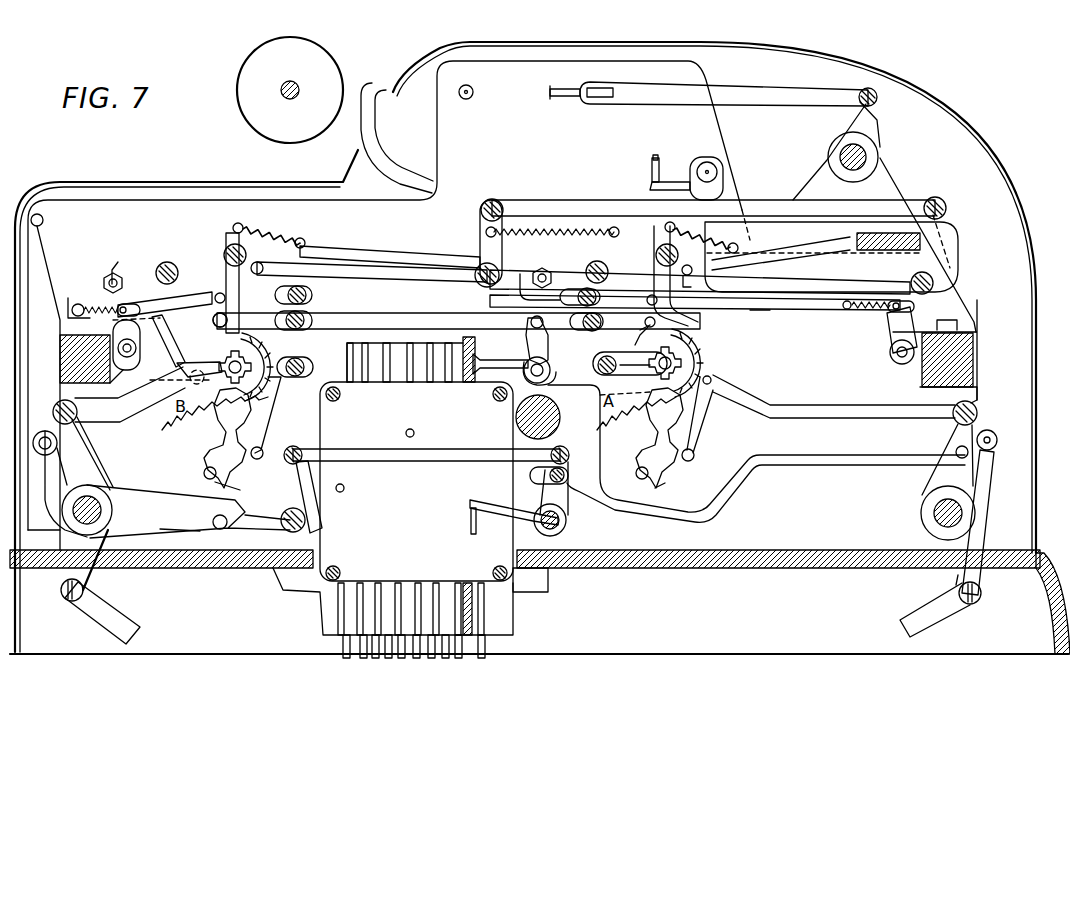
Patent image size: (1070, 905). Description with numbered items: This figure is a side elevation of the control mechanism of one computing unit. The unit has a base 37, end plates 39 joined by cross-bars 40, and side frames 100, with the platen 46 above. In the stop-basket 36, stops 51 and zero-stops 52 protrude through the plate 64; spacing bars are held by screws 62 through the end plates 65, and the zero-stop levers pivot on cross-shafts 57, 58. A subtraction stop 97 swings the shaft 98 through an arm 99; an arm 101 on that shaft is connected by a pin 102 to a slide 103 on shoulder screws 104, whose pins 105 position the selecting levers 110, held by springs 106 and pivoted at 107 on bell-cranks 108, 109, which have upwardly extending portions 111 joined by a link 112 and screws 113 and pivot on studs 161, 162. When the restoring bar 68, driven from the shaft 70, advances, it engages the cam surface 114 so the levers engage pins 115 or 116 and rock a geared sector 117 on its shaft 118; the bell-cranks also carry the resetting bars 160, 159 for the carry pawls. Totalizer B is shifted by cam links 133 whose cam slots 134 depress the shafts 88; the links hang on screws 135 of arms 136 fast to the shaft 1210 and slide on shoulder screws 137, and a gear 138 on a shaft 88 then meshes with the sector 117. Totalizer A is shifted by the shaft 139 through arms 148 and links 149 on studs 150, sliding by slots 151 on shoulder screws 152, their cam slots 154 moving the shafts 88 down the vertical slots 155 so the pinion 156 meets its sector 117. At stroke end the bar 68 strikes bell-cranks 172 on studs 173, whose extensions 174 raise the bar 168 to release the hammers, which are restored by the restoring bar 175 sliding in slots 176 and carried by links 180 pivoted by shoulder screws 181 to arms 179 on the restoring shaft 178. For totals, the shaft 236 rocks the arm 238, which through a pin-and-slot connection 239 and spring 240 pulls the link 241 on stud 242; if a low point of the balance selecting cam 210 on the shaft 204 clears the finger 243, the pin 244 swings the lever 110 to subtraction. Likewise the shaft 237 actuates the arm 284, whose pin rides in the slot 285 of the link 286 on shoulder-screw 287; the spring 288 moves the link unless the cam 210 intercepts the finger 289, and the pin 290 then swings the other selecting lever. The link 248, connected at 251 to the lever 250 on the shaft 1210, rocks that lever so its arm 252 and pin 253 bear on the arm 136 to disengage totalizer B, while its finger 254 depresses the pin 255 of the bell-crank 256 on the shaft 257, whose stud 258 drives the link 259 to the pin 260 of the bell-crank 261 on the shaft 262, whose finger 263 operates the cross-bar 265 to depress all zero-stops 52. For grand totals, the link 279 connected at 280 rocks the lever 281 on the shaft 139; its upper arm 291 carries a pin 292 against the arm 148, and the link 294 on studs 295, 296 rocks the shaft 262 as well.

The stop-basket 36 is at (318, 618).
The base 37 is at (710, 551).
The end plates 39 is at (978, 395).
The connecting cross-bars 40 is at (60, 360).
The platen 46 is at (286, 145).
The stops 51 is at (440, 340).
The zero-stop 52 is at (472, 338).
The cross-shaft 57 is at (343, 491).
The cross-shaft 58 is at (412, 436).
The screws 62 is at (340, 398).
The plate 64 is at (330, 636).
The end plates 65 is at (500, 598).
The restoring bar 68 is at (858, 252).
The revolving shaft 70 is at (561, 418).
The totalizer shafts 88 is at (262, 392).
The subtraction stop 97 is at (490, 645).
The shaft 98 is at (550, 363).
The arm 99 is at (470, 372).
The side frames 100 is at (974, 316).
The arm 101 is at (549, 340).
The pin 102 is at (567, 322).
The slide 103 is at (366, 326).
The shoulder screws 104 is at (305, 310).
The pins 105 is at (178, 340).
The springs 106 is at (270, 232).
The pivot 107 is at (230, 248).
The bell-crank 108 is at (365, 260).
The bell-crank 109 is at (778, 278).
The subtraction selecting lever 110 is at (250, 420).
The upwardly extending portions 111 is at (480, 246).
The link 112 is at (548, 210).
The screws 113 is at (508, 199).
The cam surface 114 is at (780, 250).
The pins 115 is at (204, 474).
The pins 116 is at (258, 460).
The geared sector 117 is at (183, 452).
The shaft 118 is at (236, 492).
The cam links 133 is at (136, 416).
The cam slots 134 is at (180, 370).
The screws 135 is at (58, 406).
The arms 136 is at (93, 458).
The shoulder screws 137 is at (318, 352).
The gear 138 is at (242, 354).
The shaft 139 is at (932, 520).
The arms 148 is at (955, 441).
The links 149 is at (812, 418).
The studs 150 is at (978, 416).
The slots 151 is at (612, 378).
The shoulder screws 152 is at (603, 366).
The cam slots 154 is at (713, 392).
The vertical slots 155 is at (390, 384).
The pinion 156 is at (682, 338).
The resetting bar 159 is at (690, 276).
The resetting bar 160 is at (262, 263).
The stud 161 is at (500, 270).
The stud 162 is at (934, 284).
The bar 168 is at (652, 170).
The bell-cranks 172 is at (725, 195).
The studs 173 is at (722, 170).
The extensions 174 is at (652, 190).
The restoring bar 175 is at (617, 93).
The slots 176 is at (566, 98).
The restoring shaft 178 is at (867, 157).
The arms 179 is at (878, 127).
The links 180 is at (758, 103).
The shoulder screws 181 is at (878, 99).
The shaft 204 is at (120, 278).
The balance selecting cam 210 is at (118, 262).
The shaft 236 is at (897, 362).
The shaft 237 is at (137, 350).
The arm 238 is at (893, 333).
The pin-and-slot connection 239 is at (915, 307).
The spring 240 is at (868, 312).
The link 241 is at (760, 312).
The stud 242 is at (594, 292).
The finger 243 is at (536, 280).
The pin 244 is at (650, 298).
The link 248 is at (134, 627).
The lever 250 is at (60, 590).
The pivotal connection 251 is at (90, 592).
The arm 252 is at (52, 480).
The pin 253 is at (45, 425).
The finger 254 is at (178, 530).
The pin 255 is at (222, 530).
The bell-crank 256 is at (312, 514).
The shaft 257 is at (308, 528).
The stud 258 is at (322, 453).
The link 259 is at (388, 462).
The pin 260 is at (569, 456).
The bell-crank 261 is at (568, 520).
The shaft 262 is at (558, 532).
The finger 263 is at (490, 512).
The cross-bar 265 is at (471, 525).
The link 279 is at (905, 625).
The pivotal connection 280 is at (982, 597).
The lever 281 is at (952, 590).
The arm 284 is at (150, 330).
The slot 285 is at (160, 306).
The link 286 is at (218, 312).
The shoulder-screw 287 is at (306, 290).
The spring 288 is at (126, 306).
The finger 289 is at (78, 303).
The pin 290 is at (226, 295).
The upper arm 291 is at (980, 488).
The pin 292 is at (998, 445).
The link 294 is at (770, 466).
The stud 295 is at (552, 485).
The stud 296 is at (968, 456).
The shaft 1210 is at (108, 512).